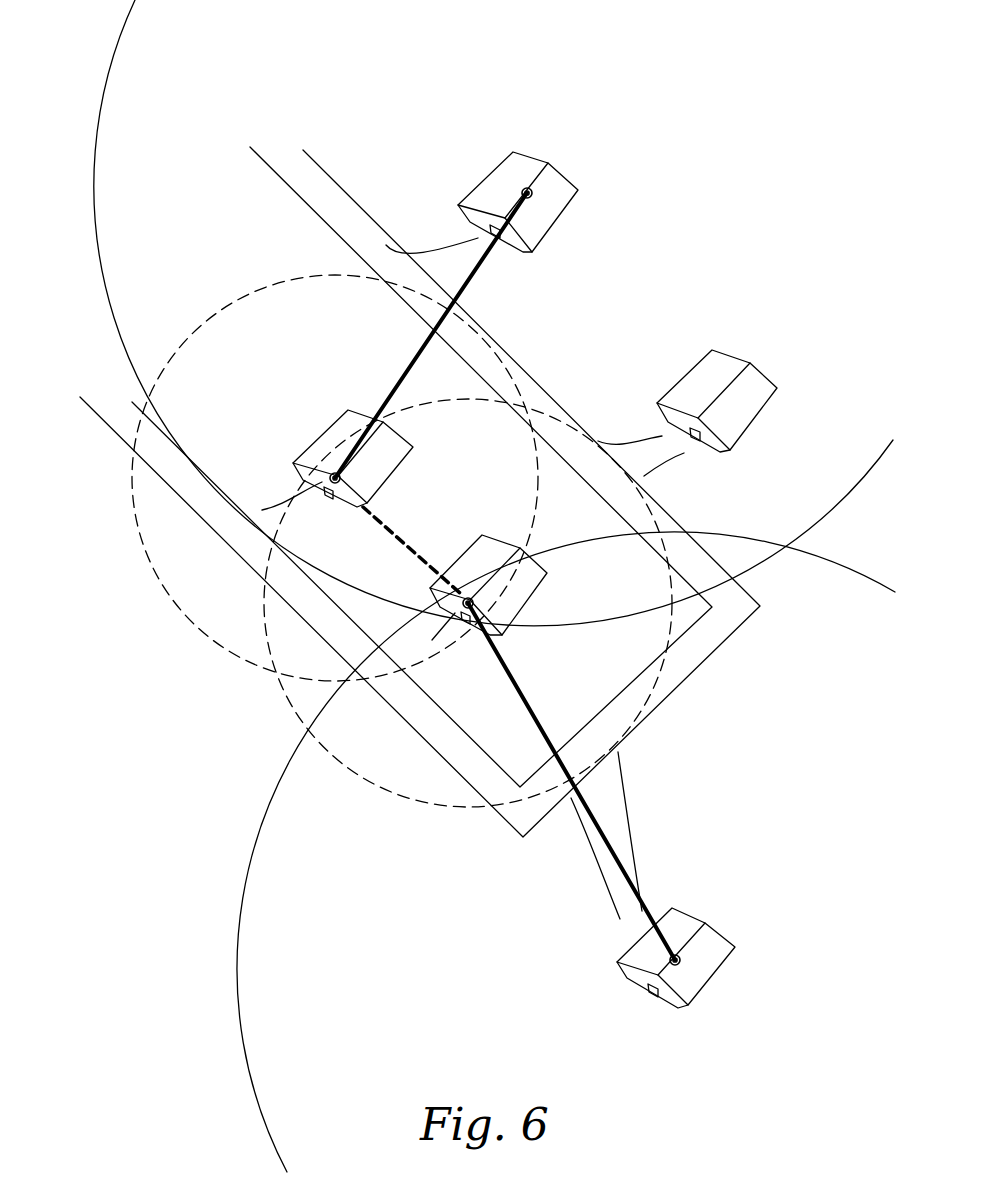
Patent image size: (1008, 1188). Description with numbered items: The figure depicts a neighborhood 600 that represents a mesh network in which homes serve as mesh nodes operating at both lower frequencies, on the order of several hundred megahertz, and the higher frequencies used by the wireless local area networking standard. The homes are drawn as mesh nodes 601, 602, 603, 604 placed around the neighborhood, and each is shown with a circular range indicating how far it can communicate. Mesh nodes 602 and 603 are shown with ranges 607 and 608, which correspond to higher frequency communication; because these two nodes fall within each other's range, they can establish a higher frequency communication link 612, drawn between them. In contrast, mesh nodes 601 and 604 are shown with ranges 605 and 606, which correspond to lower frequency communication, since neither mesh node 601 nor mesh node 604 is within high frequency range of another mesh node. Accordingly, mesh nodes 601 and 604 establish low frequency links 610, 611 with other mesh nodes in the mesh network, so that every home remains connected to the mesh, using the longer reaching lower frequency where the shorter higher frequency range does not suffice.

The neighborhood 600 is at (160, 832).
The mesh node 601 is at (488, 171).
The mesh node 602 is at (332, 421).
The mesh node 603 is at (481, 536).
The mesh node 604 is at (621, 966).
The range 605 is at (91, 178).
The range 606 is at (243, 957).
The range 607 is at (141, 541).
The range 608 is at (289, 702).
The low frequency link 610 is at (418, 350).
The low frequency link 611 is at (505, 678).
The higher frequency communication link 612 is at (403, 545).